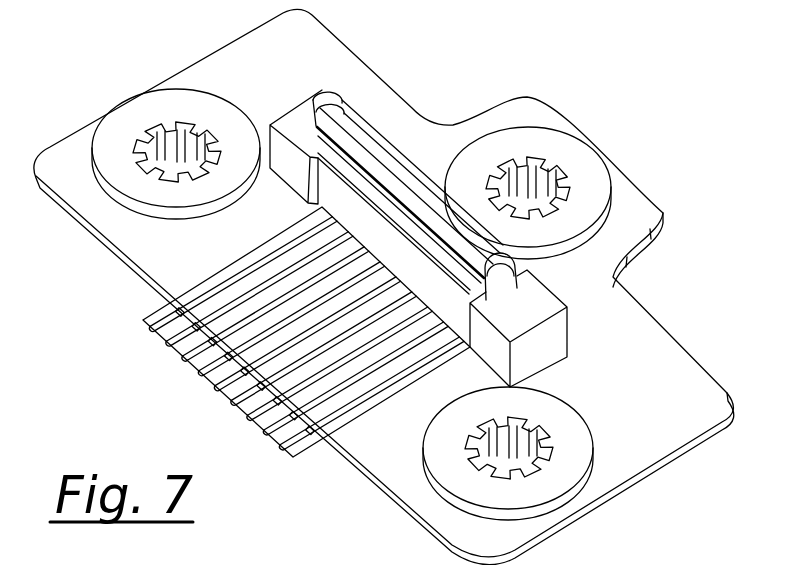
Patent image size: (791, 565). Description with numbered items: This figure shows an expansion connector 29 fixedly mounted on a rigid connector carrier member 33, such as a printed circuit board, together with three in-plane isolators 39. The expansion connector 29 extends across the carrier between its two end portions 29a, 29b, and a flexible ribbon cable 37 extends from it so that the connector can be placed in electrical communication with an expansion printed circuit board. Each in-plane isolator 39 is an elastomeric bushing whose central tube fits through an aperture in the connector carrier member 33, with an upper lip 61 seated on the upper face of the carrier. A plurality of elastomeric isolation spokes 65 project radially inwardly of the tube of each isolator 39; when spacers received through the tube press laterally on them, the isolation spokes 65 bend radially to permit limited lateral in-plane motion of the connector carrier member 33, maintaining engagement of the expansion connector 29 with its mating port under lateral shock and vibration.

The connector carrier member 33 is at (380, 286).
The upper lip 61 is at (121, 203).
The in-plane isolators 39 is at (153, 103).
The elastomeric isolation spokes 65 is at (180, 135).
The expansion connector 29 is at (430, 188).
The end portion 29a is at (283, 117).
The end portion 29b is at (544, 352).
The flexible ribbon cable 37 is at (143, 320).